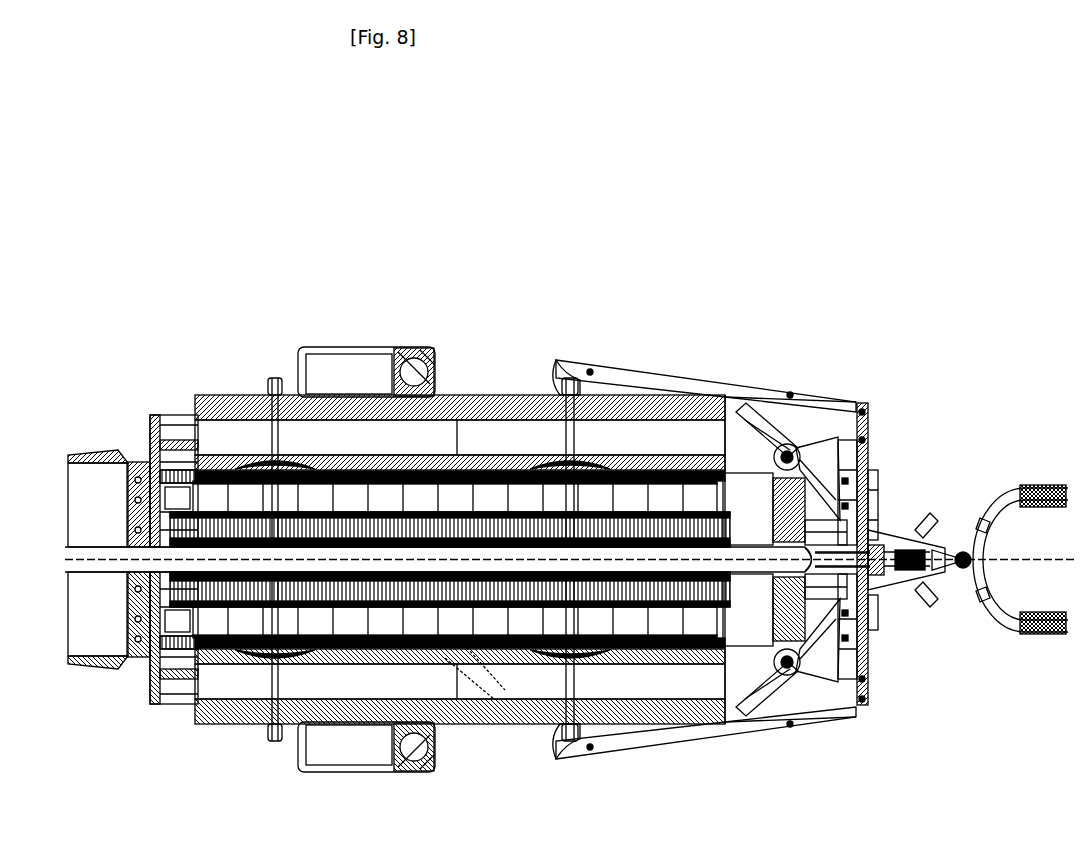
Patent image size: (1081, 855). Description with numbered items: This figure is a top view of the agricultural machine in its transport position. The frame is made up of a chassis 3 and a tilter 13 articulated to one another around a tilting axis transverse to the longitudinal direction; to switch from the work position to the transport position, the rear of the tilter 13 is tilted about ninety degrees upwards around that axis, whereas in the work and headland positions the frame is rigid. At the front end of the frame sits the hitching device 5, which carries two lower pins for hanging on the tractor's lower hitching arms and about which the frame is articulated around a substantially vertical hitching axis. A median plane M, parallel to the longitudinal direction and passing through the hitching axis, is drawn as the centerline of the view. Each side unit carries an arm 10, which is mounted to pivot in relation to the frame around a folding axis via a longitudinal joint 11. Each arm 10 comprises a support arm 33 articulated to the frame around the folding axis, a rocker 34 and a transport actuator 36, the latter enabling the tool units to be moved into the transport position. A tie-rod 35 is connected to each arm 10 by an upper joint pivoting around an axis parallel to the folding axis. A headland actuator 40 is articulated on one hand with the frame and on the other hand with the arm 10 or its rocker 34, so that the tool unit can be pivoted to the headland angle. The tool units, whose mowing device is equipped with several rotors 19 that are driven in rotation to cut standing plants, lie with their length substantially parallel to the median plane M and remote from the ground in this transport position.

The chassis 3 is at (888, 528).
The hitching device 5 is at (994, 488).
The arm 10 is at (720, 545).
The longitudinal joint 11 is at (773, 706).
The tilter 13 is at (808, 636).
The rotor 19 is at (505, 652).
The support arm 33 is at (765, 432).
The rocker 34 is at (851, 556).
The tie-rod 35 is at (878, 482).
The transport actuator 36 is at (615, 377).
The headland actuator 40 is at (876, 624).
The median plane M is at (1000, 634).